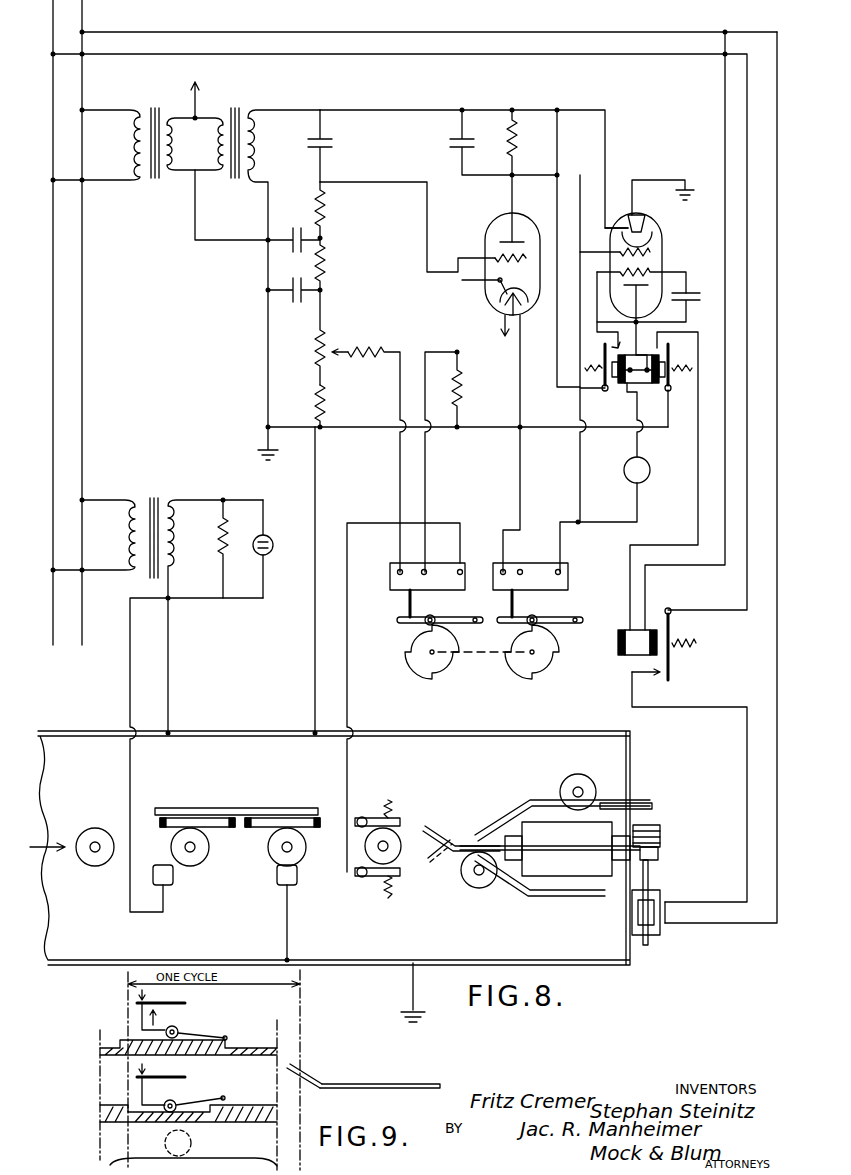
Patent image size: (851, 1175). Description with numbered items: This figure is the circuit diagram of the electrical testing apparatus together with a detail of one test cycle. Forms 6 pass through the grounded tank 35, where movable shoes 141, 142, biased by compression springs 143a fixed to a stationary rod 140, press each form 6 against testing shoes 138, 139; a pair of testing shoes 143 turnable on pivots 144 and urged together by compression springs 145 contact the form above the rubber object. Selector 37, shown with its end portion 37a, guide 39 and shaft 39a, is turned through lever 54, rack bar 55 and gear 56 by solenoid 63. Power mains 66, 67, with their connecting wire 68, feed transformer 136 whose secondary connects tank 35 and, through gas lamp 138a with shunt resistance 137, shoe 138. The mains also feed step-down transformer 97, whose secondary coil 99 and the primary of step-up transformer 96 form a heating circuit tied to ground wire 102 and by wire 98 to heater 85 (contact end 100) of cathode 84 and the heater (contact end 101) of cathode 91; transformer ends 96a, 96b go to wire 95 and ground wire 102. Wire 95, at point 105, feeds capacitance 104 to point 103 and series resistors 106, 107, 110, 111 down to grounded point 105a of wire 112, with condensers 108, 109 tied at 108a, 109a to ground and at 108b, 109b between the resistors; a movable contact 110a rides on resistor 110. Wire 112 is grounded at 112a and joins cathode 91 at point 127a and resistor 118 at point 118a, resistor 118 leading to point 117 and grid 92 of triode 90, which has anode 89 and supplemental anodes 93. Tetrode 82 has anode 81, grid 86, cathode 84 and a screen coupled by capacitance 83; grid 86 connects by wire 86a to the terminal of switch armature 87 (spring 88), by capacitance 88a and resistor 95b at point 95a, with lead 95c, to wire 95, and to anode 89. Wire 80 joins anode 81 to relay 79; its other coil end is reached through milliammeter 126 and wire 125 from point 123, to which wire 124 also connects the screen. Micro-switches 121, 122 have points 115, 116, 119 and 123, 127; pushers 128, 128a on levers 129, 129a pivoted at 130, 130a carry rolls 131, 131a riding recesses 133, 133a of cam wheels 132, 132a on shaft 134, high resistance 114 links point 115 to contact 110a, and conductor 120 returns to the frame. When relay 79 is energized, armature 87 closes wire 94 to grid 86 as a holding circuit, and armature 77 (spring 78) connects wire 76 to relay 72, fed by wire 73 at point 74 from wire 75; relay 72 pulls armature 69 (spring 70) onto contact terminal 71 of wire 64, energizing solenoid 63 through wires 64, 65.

In FIG. 8, the form 6 is at (86, 856).
In FIG. 9, the form 6 is at (192, 1144).
In FIG. 8, the tank 35 is at (192, 733).
In FIG. 8, the selector 37 is at (548, 856).
In FIG. 9, the selector 37 is at (388, 1083).
In FIG. 8, the tape end 37a is at (445, 832).
In FIG. 9, the tape end 37a is at (308, 1074).
In FIG. 8, the guide 39 is at (582, 892).
In FIG. 8, the shaft 39a is at (632, 804).
In FIG. 8, the lever 54 is at (648, 885).
In FIG. 8, the rack bar 55 is at (650, 828).
In FIG. 8, the gear 56 is at (659, 853).
In FIG. 8, the solenoid 63 is at (659, 929).
In FIG. 8, the wire 64 is at (747, 742).
In FIG. 8, the wire 65 is at (777, 765).
In FIG. 8, the power main 66 is at (82, 455).
In FIG. 8, the power main 67 is at (53, 432).
In FIG. 8, the conductor 68 is at (614, 56).
In FIG. 8, the switch armature 69 is at (674, 628).
In FIG. 8, the tension spring 70 is at (686, 650).
In FIG. 8, the contact terminal 71 is at (656, 676).
In FIG. 8, the electromagnetic relay 72 is at (634, 652).
In FIG. 8, the wire 73 is at (679, 565).
In FIG. 8, the point 74 is at (735, 26).
In FIG. 8, the wire 75 is at (553, 26).
In FIG. 8, the wire 76 is at (577, 583).
In FIG. 8, the switch armature 77 is at (670, 390).
In FIG. 8, the tension spring 78 is at (678, 364).
In FIG. 8, the relay 79 is at (642, 378).
In FIG. 8, the wire 80 is at (616, 320).
In FIG. 8, the anode 81 is at (646, 284).
In FIG. 8, the tetrode 82 is at (667, 235).
In FIG. 8, the capacitance 83 is at (699, 288).
In FIG. 8, the cathode 84 is at (648, 232).
In FIG. 8, the heater 85 is at (632, 222).
In FIG. 8, the input grid 86 is at (644, 255).
In FIG. 8, the wire 86a is at (584, 258).
In FIG. 8, the switch armature 87 is at (604, 390).
In FIG. 8, the tension spring 88 is at (600, 355).
In FIG. 8, the capacitance 88a is at (452, 144).
In FIG. 8, the anode 89 is at (516, 240).
In FIG. 8, the triode 90 is at (490, 216).
In FIG. 8, the cathode 91 is at (522, 298).
In FIG. 8, the input grid 92 is at (496, 256).
In FIG. 8, the supplemental anodes 93 is at (504, 300).
In FIG. 8, the wire 94 is at (557, 386).
In FIG. 8, the wire 95 is at (464, 110).
In FIG. 8, the point 95a is at (513, 110).
In FIG. 8, the resistor 95b is at (517, 152).
In FIG. 8, the conductor 95c is at (511, 177).
In FIG. 8, the step-up transformer 96 is at (261, 142).
In FIG. 8, the end 96a is at (243, 105).
In FIG. 8, the end 96b is at (242, 182).
In FIG. 8, the step-down transformer 97 is at (159, 103).
In FIG. 8, the wire 98 is at (204, 100).
In FIG. 8, the secondary winding 99 is at (195, 156).
In FIG. 8, the contact end 100 is at (667, 184).
In FIG. 8, the contact end 101 is at (504, 330).
In FIG. 8, the ground wire 102 is at (268, 353).
In FIG. 8, the point 103 is at (322, 182).
In FIG. 8, the capacitance 104 is at (331, 146).
In FIG. 8, the point 105 is at (330, 106).
In FIG. 8, the grounded point 105a is at (319, 429).
In FIG. 8, the resistor 106 is at (324, 210).
In FIG. 8, the resistor 107 is at (324, 262).
In FIG. 8, the condenser 108 is at (293, 228).
In FIG. 8, the terminal connection 108a is at (268, 241).
In FIG. 8, the terminal connection 108b is at (322, 238).
In FIG. 8, the condenser 109 is at (293, 280).
In FIG. 8, the terminal connection 109a is at (268, 291).
In FIG. 8, the terminal connection 109b is at (322, 290).
In FIG. 8, the resistor 110 is at (315, 352).
In FIG. 8, the wiper 110a is at (336, 358).
In FIG. 8, the resistor 111 is at (316, 400).
In FIG. 8, the wire 112 is at (338, 428).
In FIG. 8, the point 112a is at (266, 428).
In FIG. 8, the high resistance 114 is at (372, 344).
In FIG. 8, the normally open point 115 is at (399, 566).
In FIG. 9, the normally open point 115 is at (140, 996).
In FIG. 8, the normally closed point 116 is at (425, 567).
In FIG. 9, the normally closed point 116 is at (140, 1008).
In FIG. 8, the point 117 is at (456, 351).
In FIG. 8, the resistor 118 is at (461, 387).
In FIG. 8, the point 118a is at (457, 432).
In FIG. 8, the connecting point 119 is at (462, 568).
In FIG. 9, the connecting point 119 is at (186, 1003).
In FIG. 8, the conductor 120 is at (348, 713).
In FIG. 8, the micro-switch 121 is at (394, 590).
In FIG. 9, the micro-switch 121 is at (161, 993).
In FIG. 8, the micro-switch 122 is at (565, 592).
In FIG. 9, the micro-switch 122 is at (161, 1067).
In FIG. 8, the point 123 is at (573, 566).
In FIG. 9, the point 123 is at (186, 1077).
In FIG. 8, the wire 124 is at (578, 458).
In FIG. 8, the wire 125 is at (640, 500).
In FIG. 8, the milliammeter 126 is at (650, 468).
In FIG. 8, the normally open point 127 is at (504, 566).
In FIG. 9, the normally open point 127 is at (140, 1068).
In FIG. 8, the point 127a is at (518, 429).
In FIG. 8, the pusher 128 is at (414, 604).
In FIG. 9, the pusher 128 is at (140, 1021).
In FIG. 8, the pusher 128a is at (516, 604).
In FIG. 9, the pusher 128a is at (140, 1088).
In FIG. 8, the lever 129 is at (476, 617).
In FIG. 9, the lever 129 is at (200, 1032).
In FIG. 8, the lever 129a is at (564, 624).
In FIG. 9, the lever 129a is at (202, 1092).
In FIG. 8, the pivot 130 is at (476, 624).
In FIG. 9, the pivot 130 is at (226, 1037).
In FIG. 8, the pivot 130a is at (580, 620).
In FIG. 9, the pivot 130a is at (226, 1096).
In FIG. 8, the roll 131 is at (425, 620).
In FIG. 9, the roll 131 is at (172, 1024).
In FIG. 8, the roll 131a is at (556, 638).
In FIG. 9, the roll 131a is at (166, 1097).
In FIG. 8, the cam wheel 132 is at (410, 660).
In FIG. 9, the cam wheel 132 is at (292, 1044).
In FIG. 8, the cam wheel 132a is at (552, 668).
In FIG. 9, the cam wheel 132a is at (290, 1096).
In FIG. 8, the recesses 133 is at (424, 676).
In FIG. 9, the recesses 133 is at (250, 1045).
In FIG. 8, the recesses 133a is at (518, 678).
In FIG. 9, the recesses 133a is at (192, 1112).
In FIG. 8, the shaft 134 is at (484, 656).
In FIG. 8, the transformer 136 is at (155, 501).
In FIG. 8, the shunt resistance 137 is at (218, 562).
In FIG. 8, the testing shoe 138 is at (173, 882).
In FIG. 8, the gas lamp 138a is at (272, 550).
In FIG. 8, the testing shoe 139 is at (298, 880).
In FIG. 8, the stationary rod 140 is at (240, 808).
In FIG. 8, the movable shoe 141 is at (172, 848).
In FIG. 8, the movable shoe 142 is at (270, 850).
In FIG. 8, the testing shoes 143 is at (382, 816).
In FIG. 9, the testing shoes 143 is at (224, 1158).
In FIG. 8, the compression springs 143a is at (164, 812).
In FIG. 8, the pivots 144 is at (364, 816).
In FIG. 8, the compression springs 145 is at (392, 804).